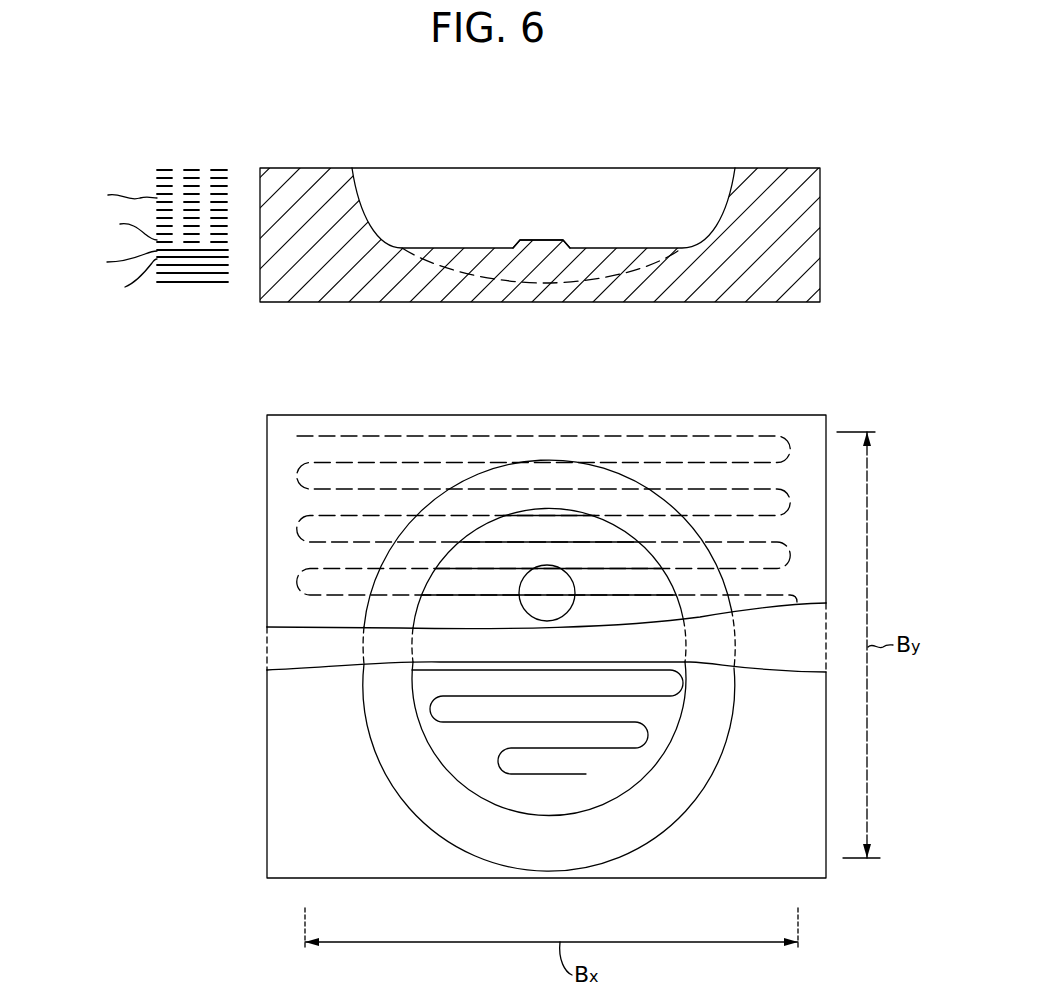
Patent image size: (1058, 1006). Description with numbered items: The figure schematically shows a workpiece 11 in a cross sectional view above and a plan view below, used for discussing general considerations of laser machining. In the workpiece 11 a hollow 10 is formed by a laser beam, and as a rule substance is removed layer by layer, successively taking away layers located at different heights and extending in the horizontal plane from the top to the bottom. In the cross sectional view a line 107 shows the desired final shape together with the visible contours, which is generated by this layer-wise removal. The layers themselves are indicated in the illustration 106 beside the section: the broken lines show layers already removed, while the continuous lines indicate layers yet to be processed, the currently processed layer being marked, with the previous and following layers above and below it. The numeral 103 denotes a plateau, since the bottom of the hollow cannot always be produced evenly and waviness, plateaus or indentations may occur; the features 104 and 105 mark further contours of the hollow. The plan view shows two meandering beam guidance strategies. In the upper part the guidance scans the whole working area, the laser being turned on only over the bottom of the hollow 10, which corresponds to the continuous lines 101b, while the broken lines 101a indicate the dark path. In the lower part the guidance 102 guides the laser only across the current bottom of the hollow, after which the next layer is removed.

The hollow 10 is at (477, 197).
The workpiece 11 is at (782, 188).
The broken lines (dark path) 101a is at (402, 568).
The continuous lines 101b is at (483, 568).
The lower coil pattern 102 is at (463, 727).
The plateau 103 is at (543, 240).
The inner annular boundary of recess 104 is at (680, 240).
The outer annular boundary of recess 105 is at (727, 190).
The illustration of layers 106 is at (182, 162).
The line of desired final shape 107 is at (445, 267).